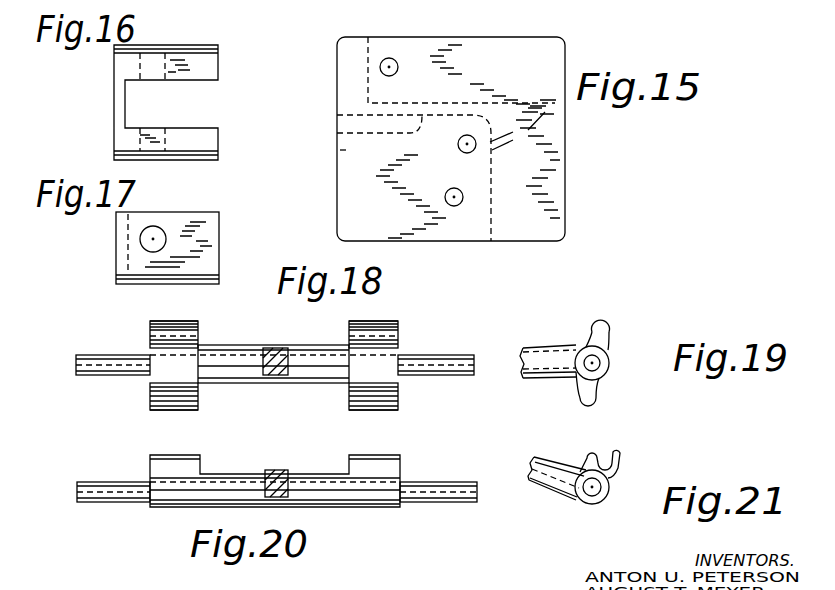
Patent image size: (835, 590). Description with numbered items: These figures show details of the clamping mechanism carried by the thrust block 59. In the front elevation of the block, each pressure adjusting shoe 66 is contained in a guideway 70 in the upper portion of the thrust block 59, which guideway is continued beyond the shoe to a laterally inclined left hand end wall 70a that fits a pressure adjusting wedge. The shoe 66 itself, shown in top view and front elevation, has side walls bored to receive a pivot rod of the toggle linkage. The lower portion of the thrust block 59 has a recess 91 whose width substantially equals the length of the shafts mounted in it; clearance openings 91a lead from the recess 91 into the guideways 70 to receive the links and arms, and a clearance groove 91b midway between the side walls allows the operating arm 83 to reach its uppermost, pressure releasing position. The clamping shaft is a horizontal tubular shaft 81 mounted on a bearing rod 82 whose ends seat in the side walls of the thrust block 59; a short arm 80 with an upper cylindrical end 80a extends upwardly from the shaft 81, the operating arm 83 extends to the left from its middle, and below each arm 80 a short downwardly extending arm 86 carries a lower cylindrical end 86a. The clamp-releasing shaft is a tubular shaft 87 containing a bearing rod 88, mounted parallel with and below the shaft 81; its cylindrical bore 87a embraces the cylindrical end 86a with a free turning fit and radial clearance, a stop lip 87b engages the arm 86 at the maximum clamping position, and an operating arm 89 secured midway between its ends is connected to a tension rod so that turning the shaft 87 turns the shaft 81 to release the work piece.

In FIG. 15, the thrust block 59 is at (560, 197).
In FIG. 16, the pressure adjusting shoe 66 is at (186, 60).
In FIG. 17, the pressure adjusting shoe 66 is at (188, 222).
In FIG. 15, the guideway 70 is at (473, 48).
In FIG. 15, the left hand end wall 70a is at (368, 84).
In FIG. 18, the short arm 80 is at (150, 341).
In FIG. 19, the short arm 80 is at (611, 336).
In FIG. 18, the upper cylindrical end 80a is at (160, 325).
In FIG. 19, the upper cylindrical end 80a is at (608, 323).
In FIG. 18, the tubular shaft 81 is at (345, 380).
In FIG. 19, the tubular shaft 81 is at (596, 379).
In FIG. 18, the bearing rod 82 is at (432, 362).
In FIG. 19, the bearing rod 82 is at (601, 363).
In FIG. 18, the operating arm 83 is at (276, 348).
In FIG. 19, the operating arm 83 is at (541, 358).
In FIG. 18, the short downwardly extending arm 86 is at (160, 393).
In FIG. 19, the short downwardly extending arm 86 is at (590, 396).
In FIG. 18, the lower cylindrical end 86a is at (172, 410).
In FIG. 19, the lower cylindrical end 86a is at (594, 408).
In FIG. 20, the tubular shaft 87 is at (305, 506).
In FIG. 21, the tubular shaft 87 is at (588, 504).
In FIG. 21, the cylindrical bore 87a is at (611, 462).
In FIG. 20, the stop lip 87b is at (178, 456).
In FIG. 21, the stop lip 87b is at (589, 458).
In FIG. 20, the bearing rod 88 is at (470, 482).
In FIG. 21, the bearing rod 88 is at (601, 487).
In FIG. 20, the operating arm 89 is at (292, 470).
In FIG. 21, the operating arm 89 is at (557, 490).
In FIG. 15, the recess 91 is at (356, 173).
In FIG. 15, the clearance opening 91a is at (476, 104).
In FIG. 15, the clearance groove 91b is at (337, 123).